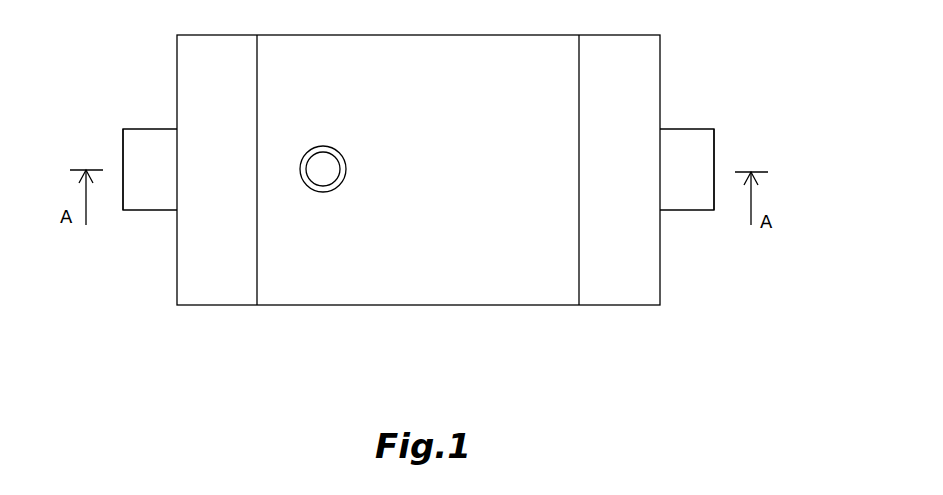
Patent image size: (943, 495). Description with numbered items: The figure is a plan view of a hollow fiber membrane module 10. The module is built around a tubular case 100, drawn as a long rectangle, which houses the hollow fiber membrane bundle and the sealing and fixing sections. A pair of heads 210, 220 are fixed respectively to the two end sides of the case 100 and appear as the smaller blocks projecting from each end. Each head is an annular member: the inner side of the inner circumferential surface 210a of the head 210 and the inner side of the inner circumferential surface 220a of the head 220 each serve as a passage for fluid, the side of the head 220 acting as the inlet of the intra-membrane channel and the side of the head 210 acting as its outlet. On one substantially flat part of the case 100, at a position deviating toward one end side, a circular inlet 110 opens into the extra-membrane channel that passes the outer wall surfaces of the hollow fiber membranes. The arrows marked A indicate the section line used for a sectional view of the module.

The hollow fiber membrane module 10 is at (721, 37).
The case 100 is at (451, 287).
The inlet 110 is at (320, 155).
The head 210 is at (203, 277).
The inner circumferential surface 210a is at (122, 142).
The head 220 is at (640, 272).
The inner circumferential surface 220a is at (714, 144).